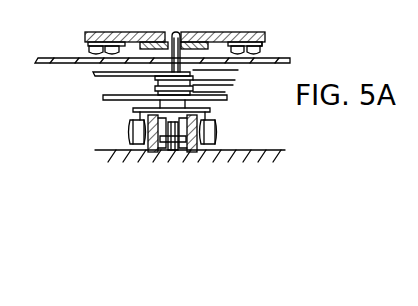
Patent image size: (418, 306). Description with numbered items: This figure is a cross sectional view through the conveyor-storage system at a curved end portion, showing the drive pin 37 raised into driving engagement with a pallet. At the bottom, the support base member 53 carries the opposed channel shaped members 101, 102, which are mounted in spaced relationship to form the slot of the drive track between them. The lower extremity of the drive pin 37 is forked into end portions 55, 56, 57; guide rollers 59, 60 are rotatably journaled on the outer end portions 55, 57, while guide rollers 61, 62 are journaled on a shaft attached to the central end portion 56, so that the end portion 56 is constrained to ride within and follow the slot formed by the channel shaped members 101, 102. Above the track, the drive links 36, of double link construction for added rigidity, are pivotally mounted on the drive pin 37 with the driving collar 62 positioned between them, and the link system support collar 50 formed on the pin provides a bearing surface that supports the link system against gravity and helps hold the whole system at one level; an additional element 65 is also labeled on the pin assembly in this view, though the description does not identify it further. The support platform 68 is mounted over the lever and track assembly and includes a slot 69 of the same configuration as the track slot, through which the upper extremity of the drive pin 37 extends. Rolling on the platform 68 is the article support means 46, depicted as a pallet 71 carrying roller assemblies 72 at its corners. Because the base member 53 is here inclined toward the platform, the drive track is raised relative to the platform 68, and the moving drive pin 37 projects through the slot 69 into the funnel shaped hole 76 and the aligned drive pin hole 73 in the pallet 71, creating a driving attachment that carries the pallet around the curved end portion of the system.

The drive links 36 is at (97, 72).
The drive pin 37 is at (188, 33).
The article support means 46 is at (394, 2).
The link system support collar 50 is at (133, 108).
The support base member 53 is at (284, 128).
The forked end portion 55 is at (160, 104).
The forked end portion 56 is at (175, 152).
The forked end portion 57 is at (226, 97).
The guide roller 59 is at (148, 137).
The guide roller 60 is at (218, 140).
The guide roller 61 is at (160, 152).
The driving collar 62 is at (157, 86).
The spool 65 is at (201, 85).
The support platform 68 is at (75, 58).
The slot 69 is at (224, 72).
The pallet 71 is at (243, 36).
The roller assemblies 72 is at (264, 48).
The drive pin hole 73 is at (176, 33).
The funnel shaped hole 76 is at (166, 43).
The channel shaped member 101 is at (131, 128).
The channel shaped member 102 is at (217, 122).